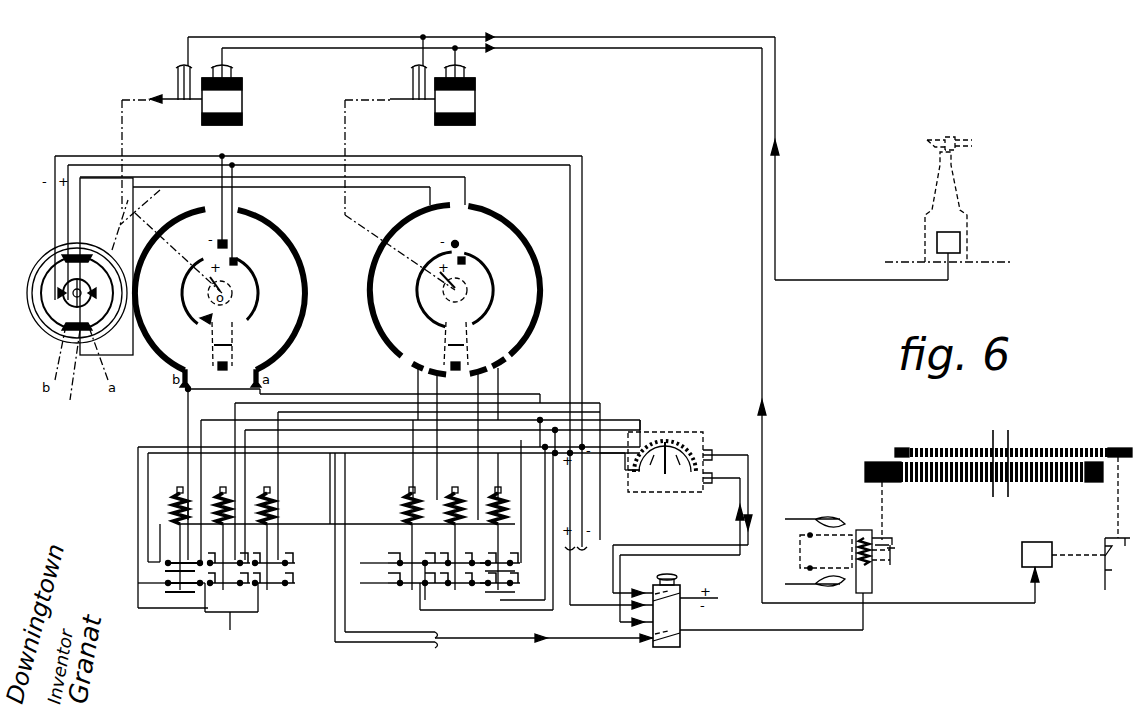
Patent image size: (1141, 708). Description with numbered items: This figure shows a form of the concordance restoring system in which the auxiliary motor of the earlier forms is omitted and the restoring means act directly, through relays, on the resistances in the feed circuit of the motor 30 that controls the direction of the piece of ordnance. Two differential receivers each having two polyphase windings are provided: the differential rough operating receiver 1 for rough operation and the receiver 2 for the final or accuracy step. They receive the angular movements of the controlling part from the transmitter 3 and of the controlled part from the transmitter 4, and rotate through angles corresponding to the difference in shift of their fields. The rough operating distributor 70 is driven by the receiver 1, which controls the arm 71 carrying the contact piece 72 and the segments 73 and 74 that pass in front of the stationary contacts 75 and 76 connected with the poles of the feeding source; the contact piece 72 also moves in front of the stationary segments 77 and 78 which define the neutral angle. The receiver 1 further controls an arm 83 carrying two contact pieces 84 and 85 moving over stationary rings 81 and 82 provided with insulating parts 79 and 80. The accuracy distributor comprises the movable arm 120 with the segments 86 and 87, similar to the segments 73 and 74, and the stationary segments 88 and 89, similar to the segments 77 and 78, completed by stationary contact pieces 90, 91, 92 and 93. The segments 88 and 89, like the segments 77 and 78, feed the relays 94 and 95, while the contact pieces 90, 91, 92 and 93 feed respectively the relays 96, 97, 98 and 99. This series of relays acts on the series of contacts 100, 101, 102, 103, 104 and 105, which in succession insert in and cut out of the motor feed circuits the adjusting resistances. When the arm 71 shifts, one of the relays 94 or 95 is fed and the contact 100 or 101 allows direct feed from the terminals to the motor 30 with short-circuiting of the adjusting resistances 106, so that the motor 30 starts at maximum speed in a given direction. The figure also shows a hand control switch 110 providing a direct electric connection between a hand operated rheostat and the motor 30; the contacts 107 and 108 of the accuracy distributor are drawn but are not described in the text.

The differential rough operating receiver 1 is at (250, 99).
The accuracy receiver 2 is at (483, 99).
The transmitter of the controlling part 3 is at (947, 199).
The transmitter of the controlled part 4 is at (1063, 554).
The motor 30 is at (839, 548).
The rough operating distributor 70 is at (248, 232).
The arm 71 is at (226, 346).
The contact piece 72 is at (245, 372).
The segment 73 is at (240, 263).
The segment 74 is at (210, 320).
The stationary contact 75 is at (228, 244).
The stationary contact 76 is at (255, 268).
The stationary segment 77 is at (285, 360).
The stationary segment 78 is at (180, 220).
The insulating part 79 is at (70, 262).
The insulating part 80 is at (108, 330).
The stationary ring 81 is at (94, 300).
The stationary ring 82 is at (85, 280).
The arm 83 is at (75, 330).
The contact piece 84 is at (70, 258).
The contact piece 85 is at (62, 296).
The segment 86 is at (495, 288).
The segment 87 is at (430, 310).
The stationary segment 88 is at (512, 360).
The stationary segment 89 is at (235, 325).
The stationary contact piece 90 is at (470, 340).
The stationary contact piece 91 is at (500, 347).
The stationary contact piece 92 is at (414, 380).
The stationary contact piece 93 is at (412, 365).
The relay 94 is at (494, 529).
The relay 95 is at (175, 529).
The relay 96 is at (451, 529).
The relay 97 is at (407, 529).
The relay 98 is at (218, 529).
The relay 99 is at (262, 529).
The contact 100 is at (502, 592).
The contact 101 is at (185, 590).
The contact 102 is at (455, 590).
The contact 103 is at (410, 590).
The contact 104 is at (222, 590).
The contact 105 is at (266, 590).
The adjusting resistances 106 is at (672, 462).
The contact 107 is at (458, 244).
The contact 108 is at (465, 260).
The switch 110 is at (667, 610).
The movable arm 120 is at (465, 352).